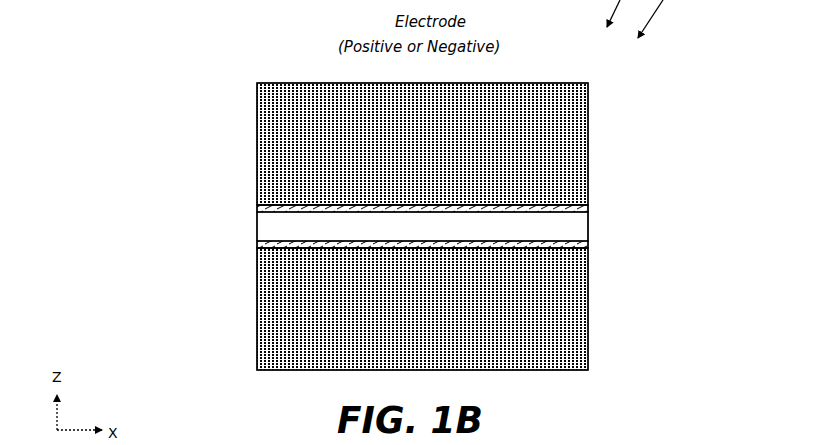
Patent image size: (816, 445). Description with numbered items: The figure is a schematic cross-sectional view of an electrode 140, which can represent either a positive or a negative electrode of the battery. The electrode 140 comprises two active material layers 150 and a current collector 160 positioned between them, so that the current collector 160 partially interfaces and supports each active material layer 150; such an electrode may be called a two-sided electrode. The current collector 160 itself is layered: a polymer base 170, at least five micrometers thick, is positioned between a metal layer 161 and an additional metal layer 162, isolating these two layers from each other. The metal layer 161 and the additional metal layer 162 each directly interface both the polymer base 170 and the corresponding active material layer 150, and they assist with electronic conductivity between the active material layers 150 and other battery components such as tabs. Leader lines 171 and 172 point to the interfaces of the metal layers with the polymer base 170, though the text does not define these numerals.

The electrode 140 is at (401, 227).
The active material layer 150 is at (247, 203).
The current collector 160 is at (406, 227).
The metal layer 161 is at (562, 204).
The additional metal layer 162 is at (573, 248).
The polymer base 170 is at (570, 220).
The first surface of current collector 171 is at (500, 205).
The second surface of current collector 172 is at (502, 247).